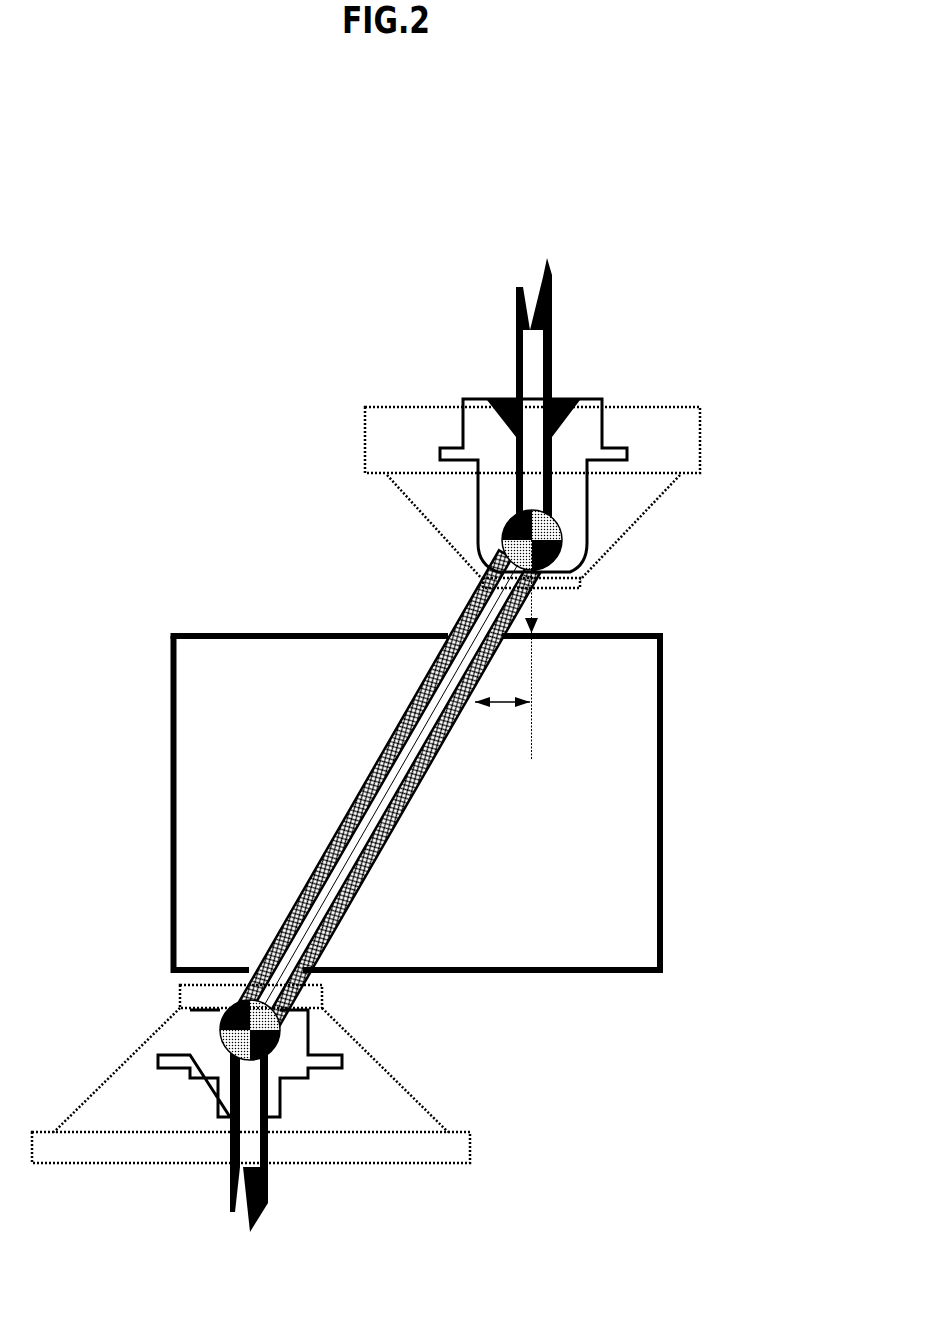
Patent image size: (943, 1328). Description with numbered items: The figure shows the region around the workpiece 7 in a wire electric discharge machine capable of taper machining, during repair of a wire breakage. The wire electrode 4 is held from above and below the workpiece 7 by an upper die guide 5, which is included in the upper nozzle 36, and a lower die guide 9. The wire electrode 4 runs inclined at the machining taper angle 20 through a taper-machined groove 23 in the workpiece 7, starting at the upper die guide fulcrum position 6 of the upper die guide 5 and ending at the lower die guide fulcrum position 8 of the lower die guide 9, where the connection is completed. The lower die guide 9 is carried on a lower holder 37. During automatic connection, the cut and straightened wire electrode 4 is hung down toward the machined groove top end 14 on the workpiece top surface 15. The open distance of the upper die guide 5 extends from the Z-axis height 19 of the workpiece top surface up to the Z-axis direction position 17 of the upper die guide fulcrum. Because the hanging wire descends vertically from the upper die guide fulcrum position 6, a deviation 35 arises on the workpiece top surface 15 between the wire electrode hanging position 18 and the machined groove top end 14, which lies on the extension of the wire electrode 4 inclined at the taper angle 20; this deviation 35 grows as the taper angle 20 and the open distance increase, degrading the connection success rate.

The wire electrode 4 is at (515, 347).
The upper die guide 5 is at (462, 447).
The upper die guide fulcrum position 6 is at (503, 537).
The workpiece 7 is at (212, 762).
The lower die guide fulcrum position 8 is at (270, 1026).
The lower die guide 9 is at (203, 1080).
The machined groove top end 14 is at (462, 630).
The workpiece top surface 15 is at (272, 634).
The Z-axis direction position of the upper die guide fulcrum 17 is at (553, 527).
The wire electrode hanging position 18 is at (535, 632).
The Z-axis height of the workpiece top surface 19 is at (663, 635).
The machining taper angle 20 is at (462, 716).
The taper-machined groove 23 is at (445, 737).
The deviation 35 is at (505, 704).
The upper nozzle 36 is at (647, 408).
The lower holder plate 37 is at (467, 1145).